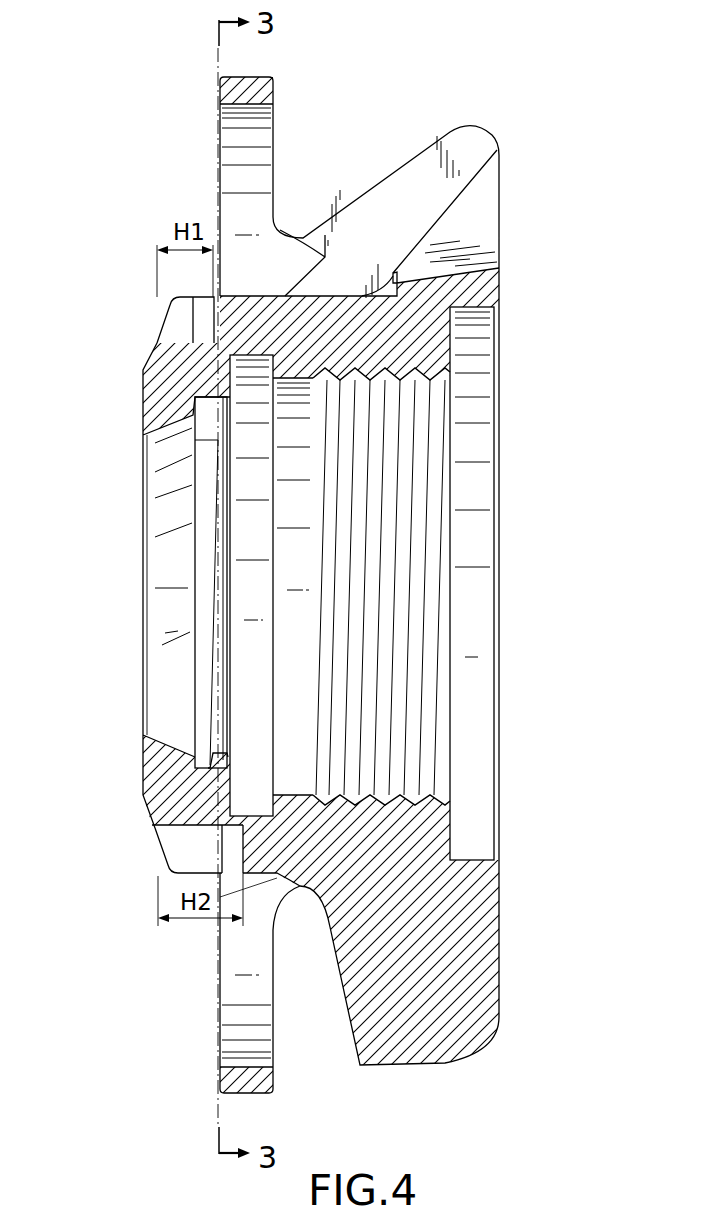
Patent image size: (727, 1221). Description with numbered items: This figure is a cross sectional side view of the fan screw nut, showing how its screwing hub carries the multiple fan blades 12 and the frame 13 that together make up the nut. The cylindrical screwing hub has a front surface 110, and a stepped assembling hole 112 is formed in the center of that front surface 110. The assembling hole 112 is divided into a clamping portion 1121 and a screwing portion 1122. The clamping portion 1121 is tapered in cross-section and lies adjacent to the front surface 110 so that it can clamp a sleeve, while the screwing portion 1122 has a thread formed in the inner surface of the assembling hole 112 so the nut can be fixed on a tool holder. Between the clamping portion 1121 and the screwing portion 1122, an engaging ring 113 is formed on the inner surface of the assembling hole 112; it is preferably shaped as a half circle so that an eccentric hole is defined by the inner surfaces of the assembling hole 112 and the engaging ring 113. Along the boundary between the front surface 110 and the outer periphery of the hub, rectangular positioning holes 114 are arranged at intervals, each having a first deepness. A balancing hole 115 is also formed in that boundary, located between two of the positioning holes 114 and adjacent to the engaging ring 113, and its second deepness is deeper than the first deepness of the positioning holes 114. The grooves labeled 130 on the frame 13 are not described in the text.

The fan blades 12 is at (410, 177).
The frame 13 is at (268, 85).
The annular grooves 130 is at (250, 109).
The front surface 110 is at (141, 388).
The assembling hole 112 is at (166, 571).
The clamping portion 1121 is at (173, 742).
The screwing portion 1122 is at (405, 793).
The engaging ring 113 is at (228, 757).
The positioning holes 114 is at (176, 340).
The balancing hole 115 is at (170, 836).